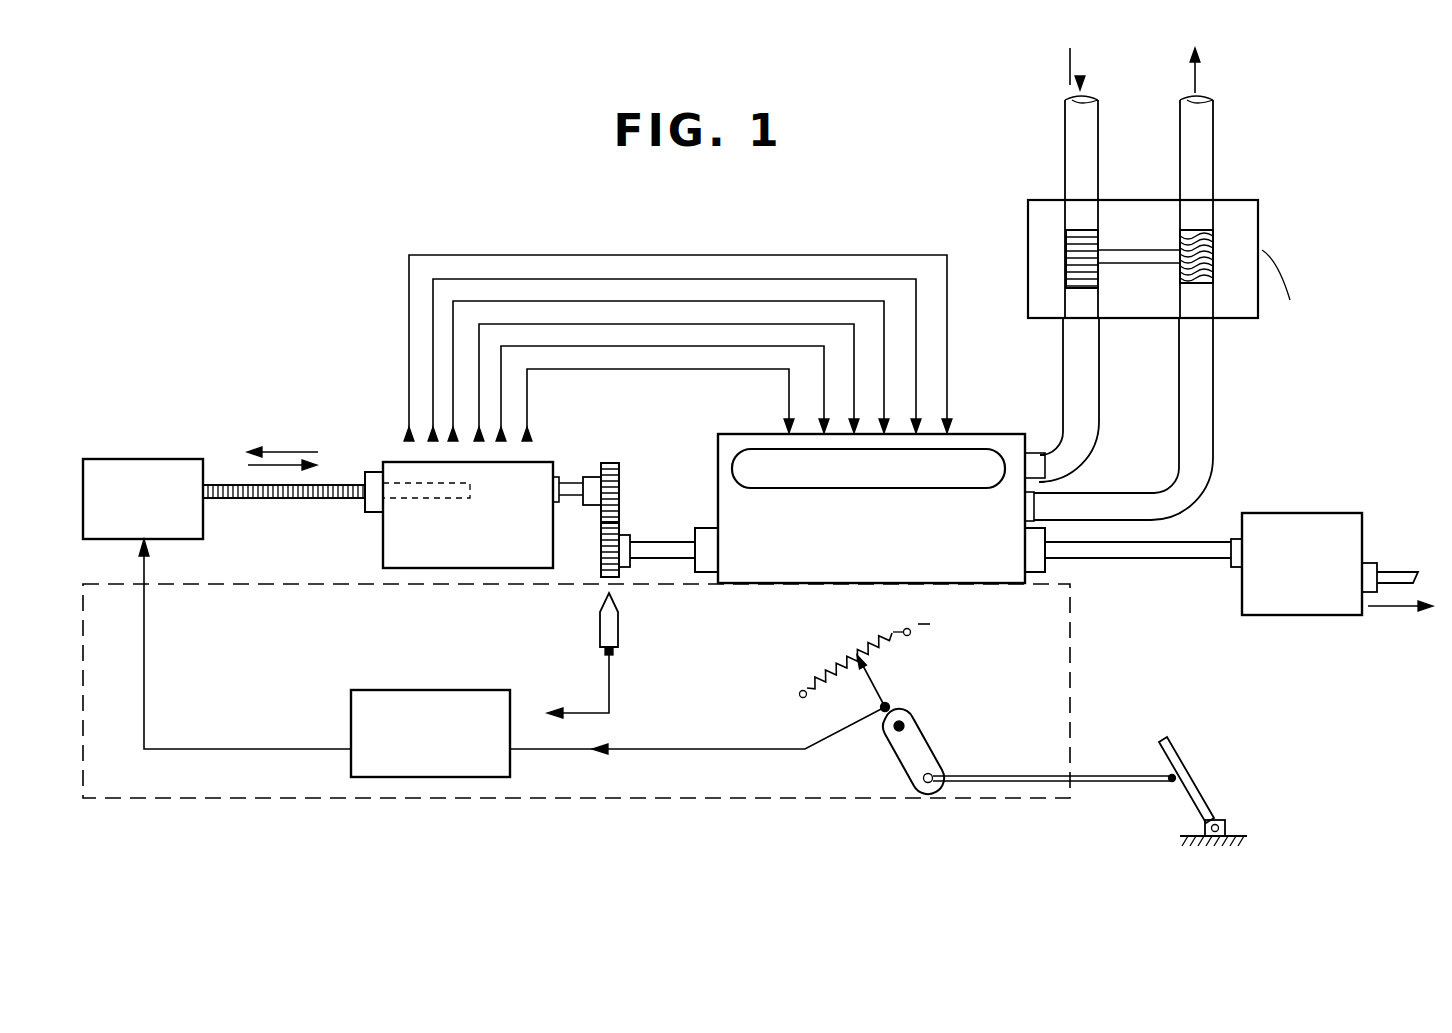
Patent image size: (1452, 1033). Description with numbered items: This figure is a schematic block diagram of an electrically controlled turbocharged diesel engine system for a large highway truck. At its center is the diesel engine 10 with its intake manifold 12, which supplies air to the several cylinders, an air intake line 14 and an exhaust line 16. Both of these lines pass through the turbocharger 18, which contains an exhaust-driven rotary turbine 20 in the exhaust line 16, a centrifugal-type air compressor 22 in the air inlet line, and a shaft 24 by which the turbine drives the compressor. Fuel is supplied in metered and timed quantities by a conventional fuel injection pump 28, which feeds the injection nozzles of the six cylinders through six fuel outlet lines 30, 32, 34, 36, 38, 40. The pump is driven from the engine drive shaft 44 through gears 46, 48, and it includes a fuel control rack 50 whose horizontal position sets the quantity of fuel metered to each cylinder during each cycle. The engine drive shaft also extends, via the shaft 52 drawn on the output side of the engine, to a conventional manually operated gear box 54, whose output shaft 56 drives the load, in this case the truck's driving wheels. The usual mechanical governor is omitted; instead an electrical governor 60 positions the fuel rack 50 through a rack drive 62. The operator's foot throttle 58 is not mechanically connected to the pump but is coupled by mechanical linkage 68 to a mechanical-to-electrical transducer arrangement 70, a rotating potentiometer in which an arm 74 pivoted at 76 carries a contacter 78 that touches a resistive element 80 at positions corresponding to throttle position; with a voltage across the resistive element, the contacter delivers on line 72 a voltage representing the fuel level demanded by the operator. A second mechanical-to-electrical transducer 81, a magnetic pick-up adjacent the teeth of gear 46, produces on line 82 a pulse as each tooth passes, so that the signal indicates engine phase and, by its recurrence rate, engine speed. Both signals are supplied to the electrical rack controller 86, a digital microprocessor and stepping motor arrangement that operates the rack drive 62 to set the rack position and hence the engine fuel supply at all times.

The diesel engine 10 is at (733, 503).
The intake manifold 12 is at (736, 468).
The air intake line 14 is at (1100, 370).
The exhaust line 16 is at (1214, 405).
The turbocharger 18 is at (1260, 245).
The rotary turbine 20 is at (1200, 232).
The air compressor 22 is at (1068, 250).
The shaft 24 is at (1123, 256).
The fuel injection pump 28 is at (383, 548).
The fuel outlet line 30 is at (548, 255).
The fuel outlet line 32 is at (594, 279).
The fuel outlet line 34 is at (630, 301).
The fuel outlet line 36 is at (666, 324).
The fuel outlet line 38 is at (708, 346).
The fuel outlet line 40 is at (740, 369).
The engine drive shaft 44 is at (658, 545).
The gear 46 is at (601, 570).
The gear 48 is at (619, 480).
The fuel control rack 50 is at (262, 498).
The output shaft 52 is at (1117, 558).
The gear box 54 is at (1362, 535).
The output shaft 56 is at (1385, 565).
The foot throttle 58 is at (1192, 778).
The electrical governor 60 is at (1007, 802).
The rack drive 62 is at (112, 459).
The mechanical linkage 68 is at (1080, 776).
The mechanical-to-electrical transducer arrangement 70 is at (954, 661).
The line 72 is at (776, 752).
The arm 74 is at (900, 762).
The pivot 76 is at (912, 722).
The contacter 78 is at (886, 700).
The resistive element 80 is at (830, 652).
The mechanical-to-electrical transducer 81 is at (618, 625).
The line 82 is at (609, 682).
The electrical rack controller 86 is at (511, 772).